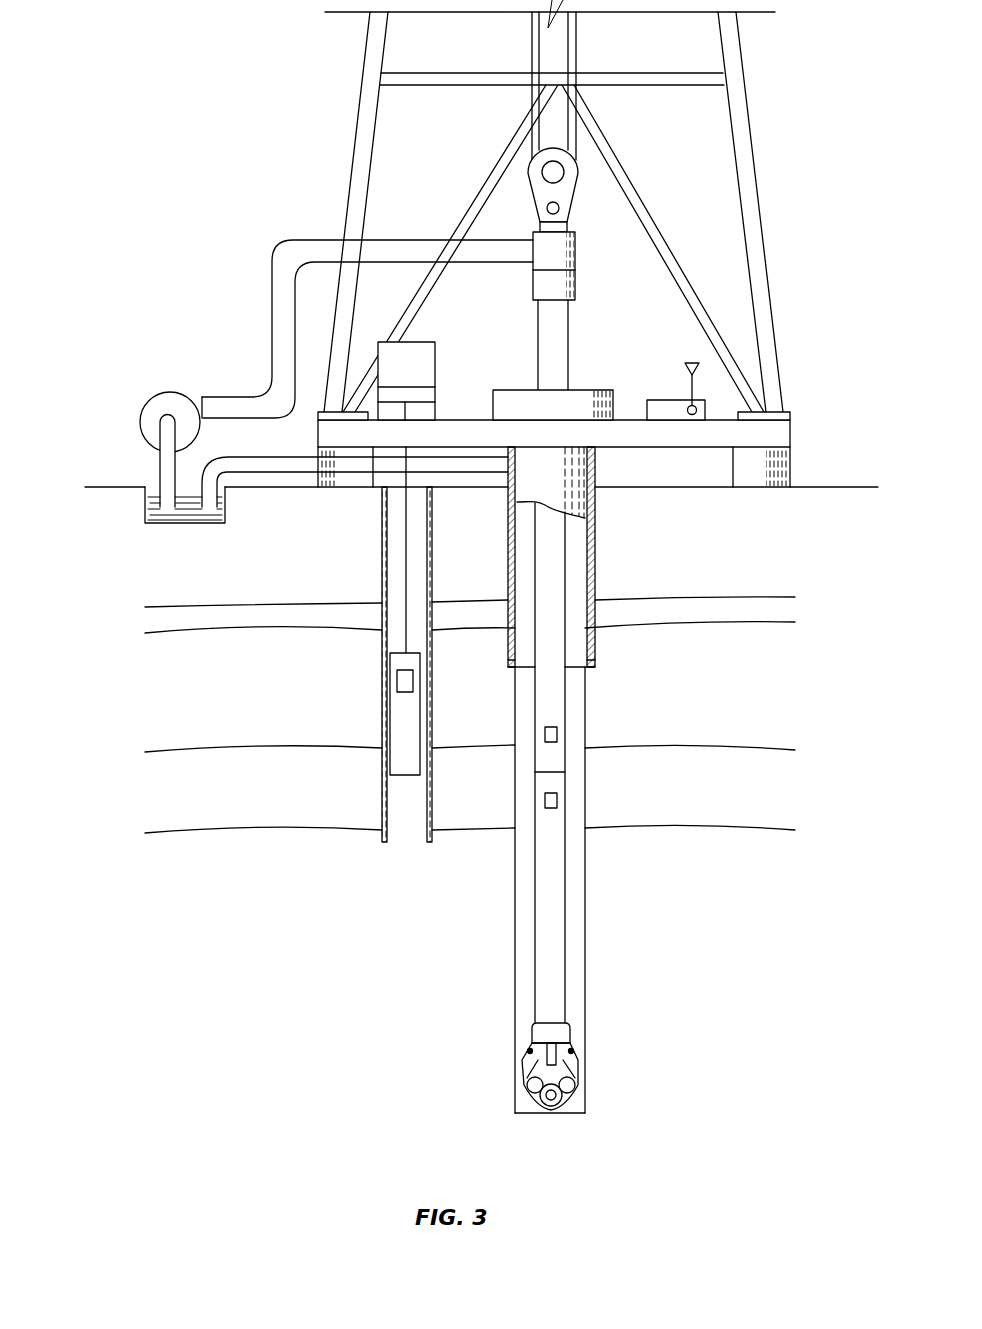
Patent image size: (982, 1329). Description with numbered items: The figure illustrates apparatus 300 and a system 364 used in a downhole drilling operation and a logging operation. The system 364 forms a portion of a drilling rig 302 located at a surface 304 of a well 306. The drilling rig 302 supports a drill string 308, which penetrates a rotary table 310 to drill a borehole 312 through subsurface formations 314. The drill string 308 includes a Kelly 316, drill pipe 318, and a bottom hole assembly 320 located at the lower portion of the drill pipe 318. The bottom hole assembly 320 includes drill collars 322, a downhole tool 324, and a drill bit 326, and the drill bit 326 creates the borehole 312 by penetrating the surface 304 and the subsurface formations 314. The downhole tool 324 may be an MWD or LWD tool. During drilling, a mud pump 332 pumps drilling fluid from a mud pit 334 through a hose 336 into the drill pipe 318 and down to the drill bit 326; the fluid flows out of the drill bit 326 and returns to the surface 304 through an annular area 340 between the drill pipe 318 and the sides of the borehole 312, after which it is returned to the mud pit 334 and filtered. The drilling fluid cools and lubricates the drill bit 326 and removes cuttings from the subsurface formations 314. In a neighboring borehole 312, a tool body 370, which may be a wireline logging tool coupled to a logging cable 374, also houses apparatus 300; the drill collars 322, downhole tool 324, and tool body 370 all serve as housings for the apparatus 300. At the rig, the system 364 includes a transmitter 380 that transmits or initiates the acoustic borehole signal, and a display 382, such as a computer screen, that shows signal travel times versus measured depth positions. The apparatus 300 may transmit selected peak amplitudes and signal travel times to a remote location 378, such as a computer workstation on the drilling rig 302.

The apparatus 300 is at (397, 680).
The drilling rig 302 is at (748, 107).
The surface 304 is at (815, 487).
The well 306 is at (606, 480).
The drill string 308 is at (572, 560).
The rotary table 310 is at (510, 390).
The borehole 312 is at (382, 598).
The subsurface formations 314 is at (128, 572).
The Kelly 316 is at (568, 325).
The drill pipe 318 is at (557, 698).
The bottom hole assembly 320 is at (467, 668).
The drill collars 322 is at (597, 660).
The downhole tool 324 is at (553, 783).
The drill bit 326 is at (575, 1068).
The mud pump 332 is at (162, 395).
The mud pit 334 is at (157, 497).
The hose 336 is at (272, 310).
The annular area 340 is at (577, 715).
The system 364 is at (205, 130).
The tool body 370 is at (390, 703).
The logging cable 374 is at (406, 575).
The remote location 378 is at (668, 400).
The transmitter 380 is at (417, 342).
The display 382 is at (697, 408).